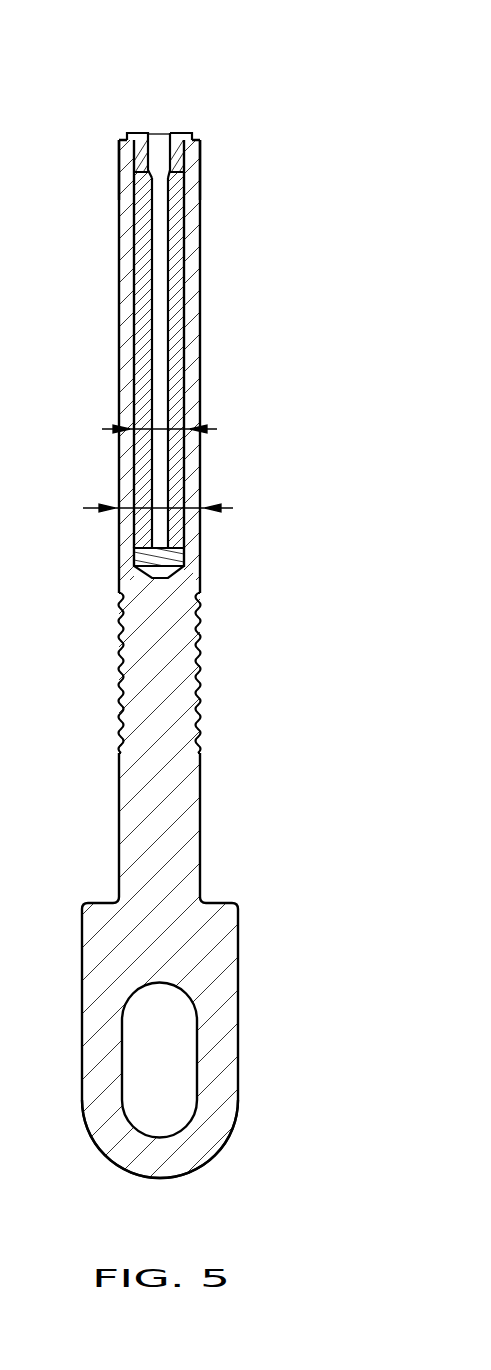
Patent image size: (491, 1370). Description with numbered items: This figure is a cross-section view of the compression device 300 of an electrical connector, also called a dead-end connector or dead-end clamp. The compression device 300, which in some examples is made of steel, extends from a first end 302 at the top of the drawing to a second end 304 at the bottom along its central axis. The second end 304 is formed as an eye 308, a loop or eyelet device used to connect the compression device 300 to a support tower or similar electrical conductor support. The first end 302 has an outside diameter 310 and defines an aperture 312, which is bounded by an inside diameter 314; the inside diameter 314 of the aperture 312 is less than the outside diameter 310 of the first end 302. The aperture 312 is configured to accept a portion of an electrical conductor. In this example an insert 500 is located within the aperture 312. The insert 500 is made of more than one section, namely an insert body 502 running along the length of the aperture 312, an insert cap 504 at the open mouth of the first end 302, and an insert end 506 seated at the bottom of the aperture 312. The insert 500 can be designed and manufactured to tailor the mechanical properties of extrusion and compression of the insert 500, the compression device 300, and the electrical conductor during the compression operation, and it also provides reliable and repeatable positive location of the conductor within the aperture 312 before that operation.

The compression device 300 is at (267, 533).
The first end 302 is at (215, 143).
The second end 304 is at (248, 1166).
The eye 308 is at (238, 1078).
The outside diameter 310 is at (143, 507).
The aperture 312 is at (133, 121).
The inside diameter 314 is at (143, 428).
The insert 500 is at (186, 327).
The insert body 502 is at (186, 234).
The insert cap 504 is at (181, 133).
The insert end 506 is at (162, 567).